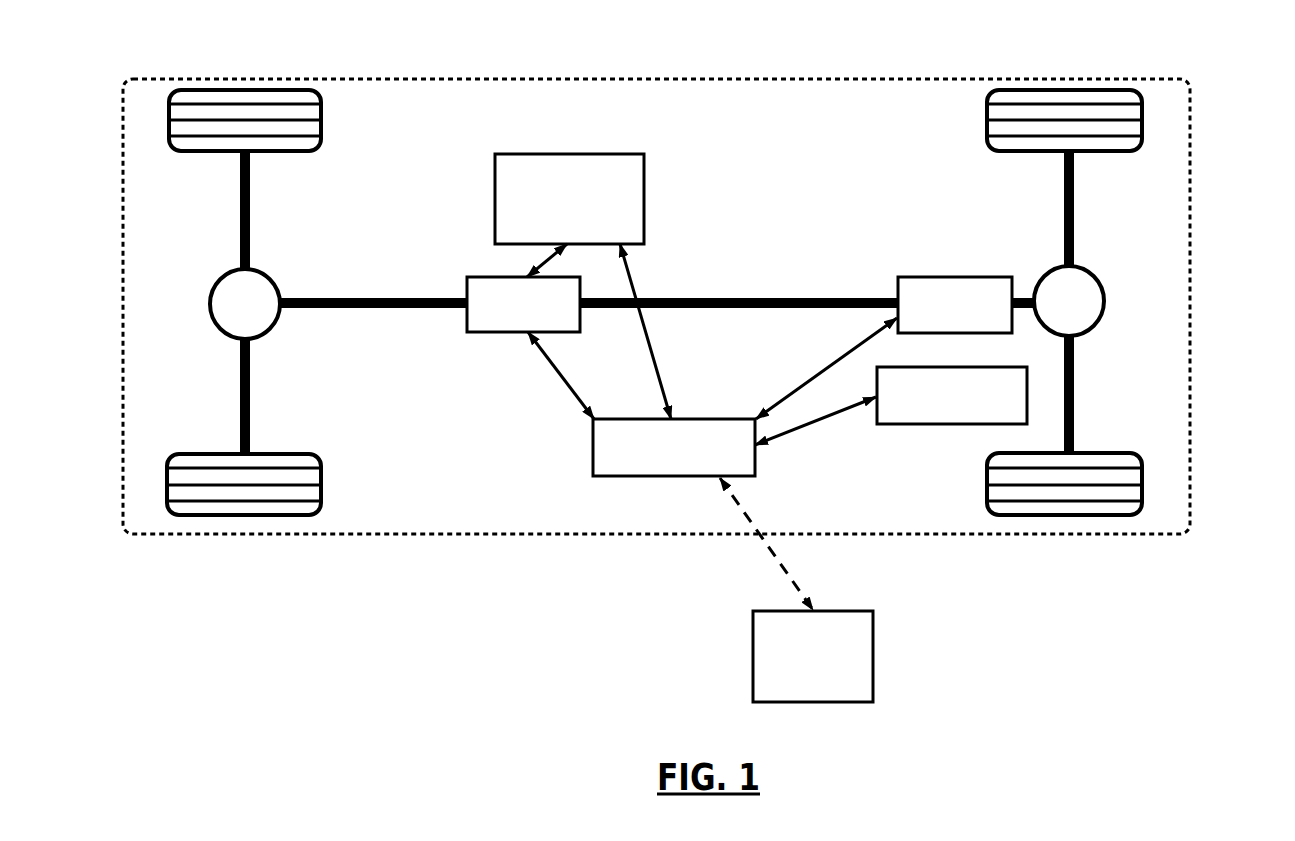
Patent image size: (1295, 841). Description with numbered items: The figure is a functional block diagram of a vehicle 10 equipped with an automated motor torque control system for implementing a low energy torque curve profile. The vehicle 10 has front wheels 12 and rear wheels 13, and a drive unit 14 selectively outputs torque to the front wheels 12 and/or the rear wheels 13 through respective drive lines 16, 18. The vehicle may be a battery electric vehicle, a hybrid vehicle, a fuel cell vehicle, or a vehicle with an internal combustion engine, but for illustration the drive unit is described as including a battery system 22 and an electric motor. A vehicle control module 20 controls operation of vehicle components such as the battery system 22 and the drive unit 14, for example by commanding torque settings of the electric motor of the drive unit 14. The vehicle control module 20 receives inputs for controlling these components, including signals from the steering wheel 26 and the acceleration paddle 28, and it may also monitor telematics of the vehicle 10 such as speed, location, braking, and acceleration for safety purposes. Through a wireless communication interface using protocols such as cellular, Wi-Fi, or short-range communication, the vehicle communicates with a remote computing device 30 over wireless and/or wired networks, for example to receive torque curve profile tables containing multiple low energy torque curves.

The vehicle 10 is at (1231, 130).
The front wheels 12 is at (1046, 90).
The rear wheels 13 is at (216, 90).
The drive unit 14 is at (477, 332).
The drive line 16 is at (1105, 302).
The drive line 18 is at (218, 285).
The vehicle control module 20 is at (675, 476).
The battery system 22 is at (610, 154).
The steering wheel 26 is at (955, 277).
The acceleration paddle 28 is at (937, 424).
The remote computing device 30 is at (842, 611).